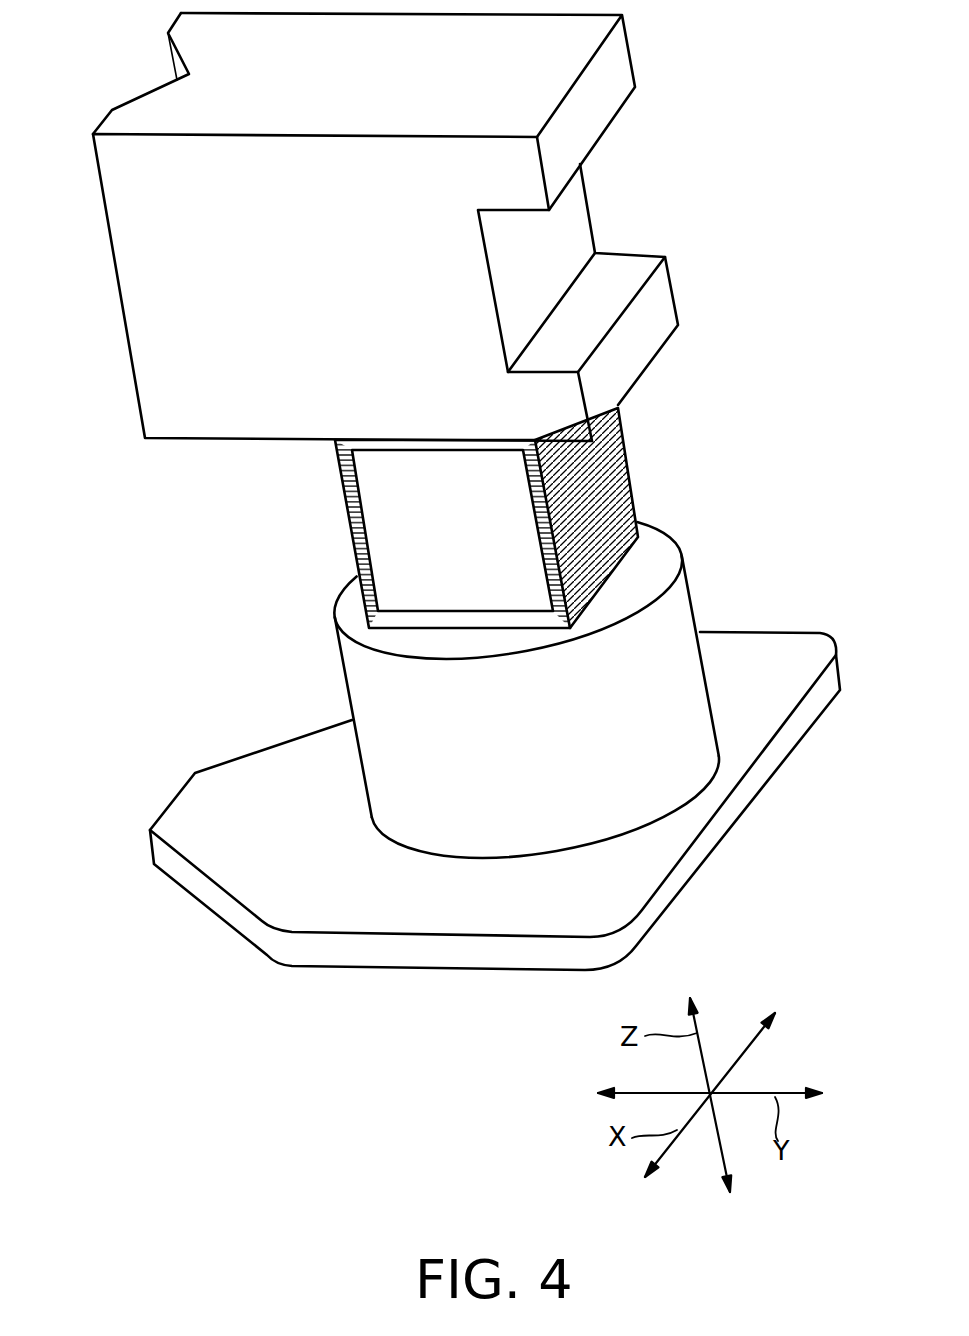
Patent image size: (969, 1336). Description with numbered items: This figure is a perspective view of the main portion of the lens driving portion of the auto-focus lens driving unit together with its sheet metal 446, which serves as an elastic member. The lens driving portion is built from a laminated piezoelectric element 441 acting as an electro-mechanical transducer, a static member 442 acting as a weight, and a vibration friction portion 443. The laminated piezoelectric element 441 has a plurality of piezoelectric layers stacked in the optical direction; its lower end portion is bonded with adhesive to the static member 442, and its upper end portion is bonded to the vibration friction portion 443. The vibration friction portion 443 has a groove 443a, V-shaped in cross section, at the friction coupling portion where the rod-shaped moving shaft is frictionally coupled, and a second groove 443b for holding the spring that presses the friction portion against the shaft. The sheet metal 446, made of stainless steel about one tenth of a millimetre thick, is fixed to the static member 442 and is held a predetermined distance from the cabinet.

The laminated piezoelectric element 441 is at (627, 460).
The static member 442 is at (680, 615).
The vibration friction portion 443 is at (613, 68).
The groove 443a is at (137, 99).
The groove 443b is at (570, 228).
The sheet metal 446 is at (752, 785).